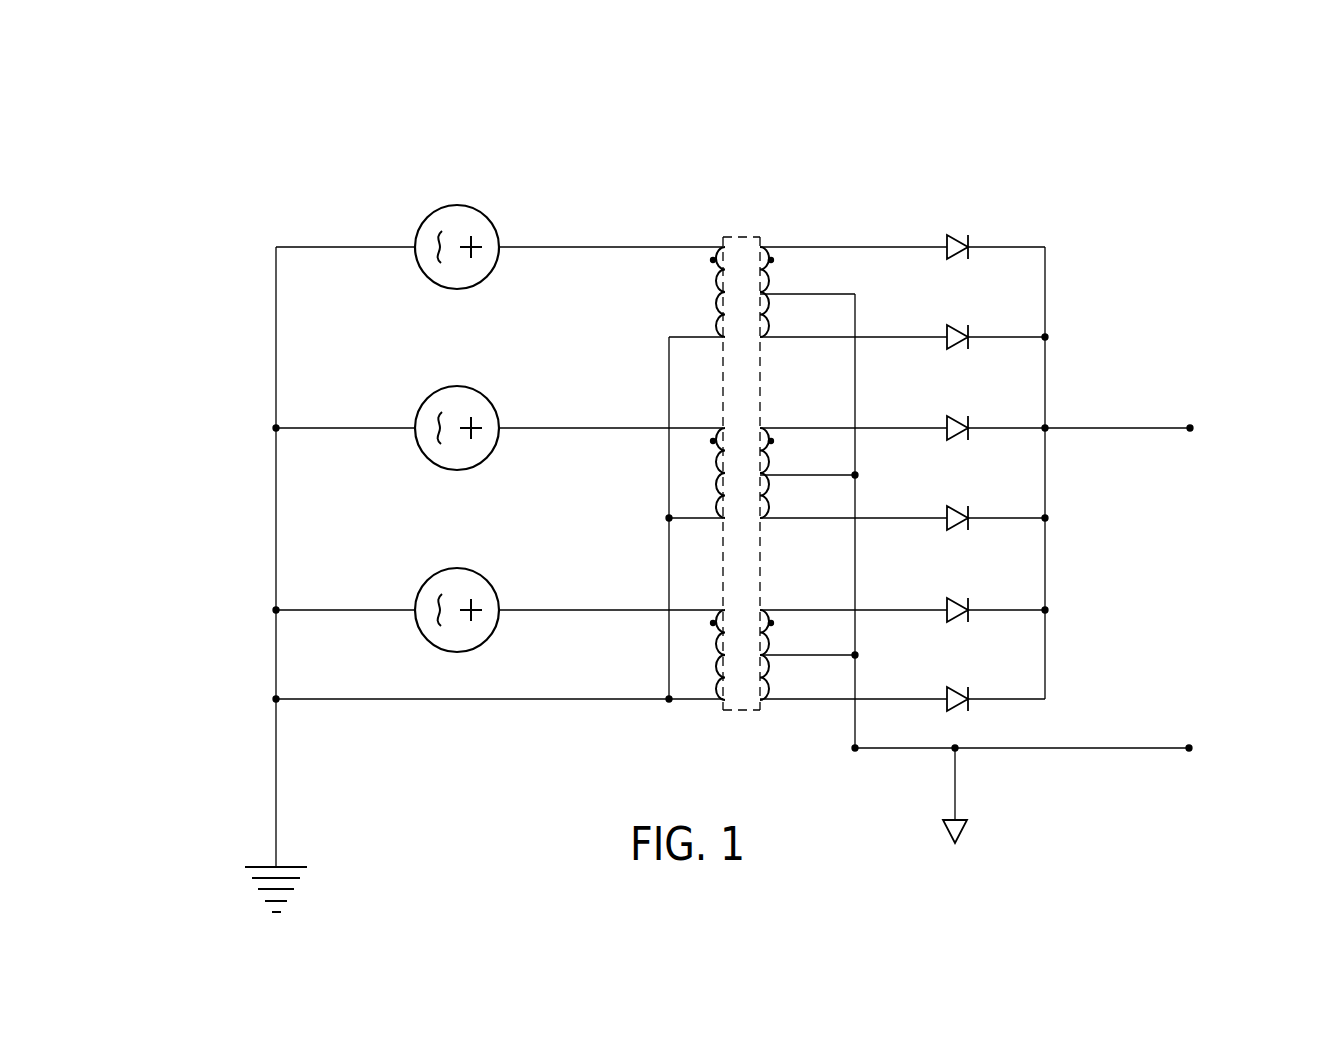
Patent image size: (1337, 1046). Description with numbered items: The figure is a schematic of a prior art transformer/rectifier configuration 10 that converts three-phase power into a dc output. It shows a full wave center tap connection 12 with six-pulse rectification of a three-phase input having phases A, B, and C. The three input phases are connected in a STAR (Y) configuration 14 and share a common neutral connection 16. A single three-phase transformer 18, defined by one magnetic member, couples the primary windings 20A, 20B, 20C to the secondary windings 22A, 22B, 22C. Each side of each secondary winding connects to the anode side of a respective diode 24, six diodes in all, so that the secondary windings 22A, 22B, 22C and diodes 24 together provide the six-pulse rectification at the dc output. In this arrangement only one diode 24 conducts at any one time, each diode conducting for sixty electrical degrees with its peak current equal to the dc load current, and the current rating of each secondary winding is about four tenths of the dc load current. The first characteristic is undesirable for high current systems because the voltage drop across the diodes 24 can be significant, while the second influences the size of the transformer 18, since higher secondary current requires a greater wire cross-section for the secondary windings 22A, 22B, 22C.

The transformer/rectifier configuration 10 is at (237, 207).
The full wave center tap connection 12 is at (807, 224).
The STAR (Y) configuration 14 is at (630, 216).
The common neutral connection 16 is at (669, 702).
The 3-phase transformer 18 is at (741, 237).
The primary winding 20A is at (721, 293).
The primary winding 20B is at (700, 475).
The primary winding 20C is at (696, 657).
The secondary winding 22A is at (763, 317).
The secondary winding 22B is at (763, 493).
The secondary winding 22C is at (758, 682).
The diode 24 is at (984, 186).